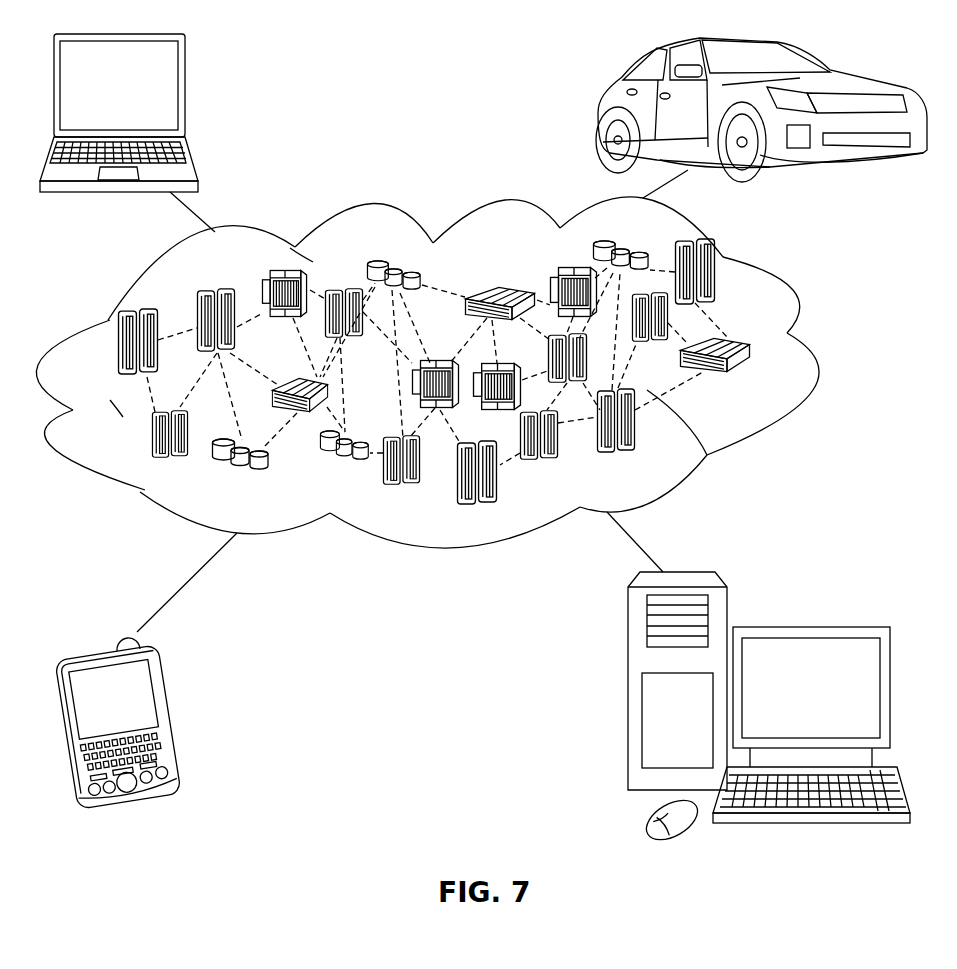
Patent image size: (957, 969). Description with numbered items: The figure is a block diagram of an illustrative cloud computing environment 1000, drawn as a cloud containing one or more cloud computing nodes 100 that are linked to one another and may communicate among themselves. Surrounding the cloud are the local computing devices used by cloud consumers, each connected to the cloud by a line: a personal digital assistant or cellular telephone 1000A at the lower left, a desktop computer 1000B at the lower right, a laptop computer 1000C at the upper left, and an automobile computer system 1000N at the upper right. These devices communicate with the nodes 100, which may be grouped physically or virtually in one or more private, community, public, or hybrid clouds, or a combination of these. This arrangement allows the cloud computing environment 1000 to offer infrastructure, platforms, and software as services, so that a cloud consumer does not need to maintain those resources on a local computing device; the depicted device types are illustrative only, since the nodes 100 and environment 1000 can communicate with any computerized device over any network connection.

The cloud computing nodes 100 is at (764, 384).
The cloud computing environment 1000 is at (813, 348).
The personal digital assistant (PDA) or cellular telephone 1000A is at (175, 715).
The desktop computer 1000B is at (810, 627).
The laptop computer 1000C is at (185, 93).
The automobile computer system 1000N is at (600, 107).